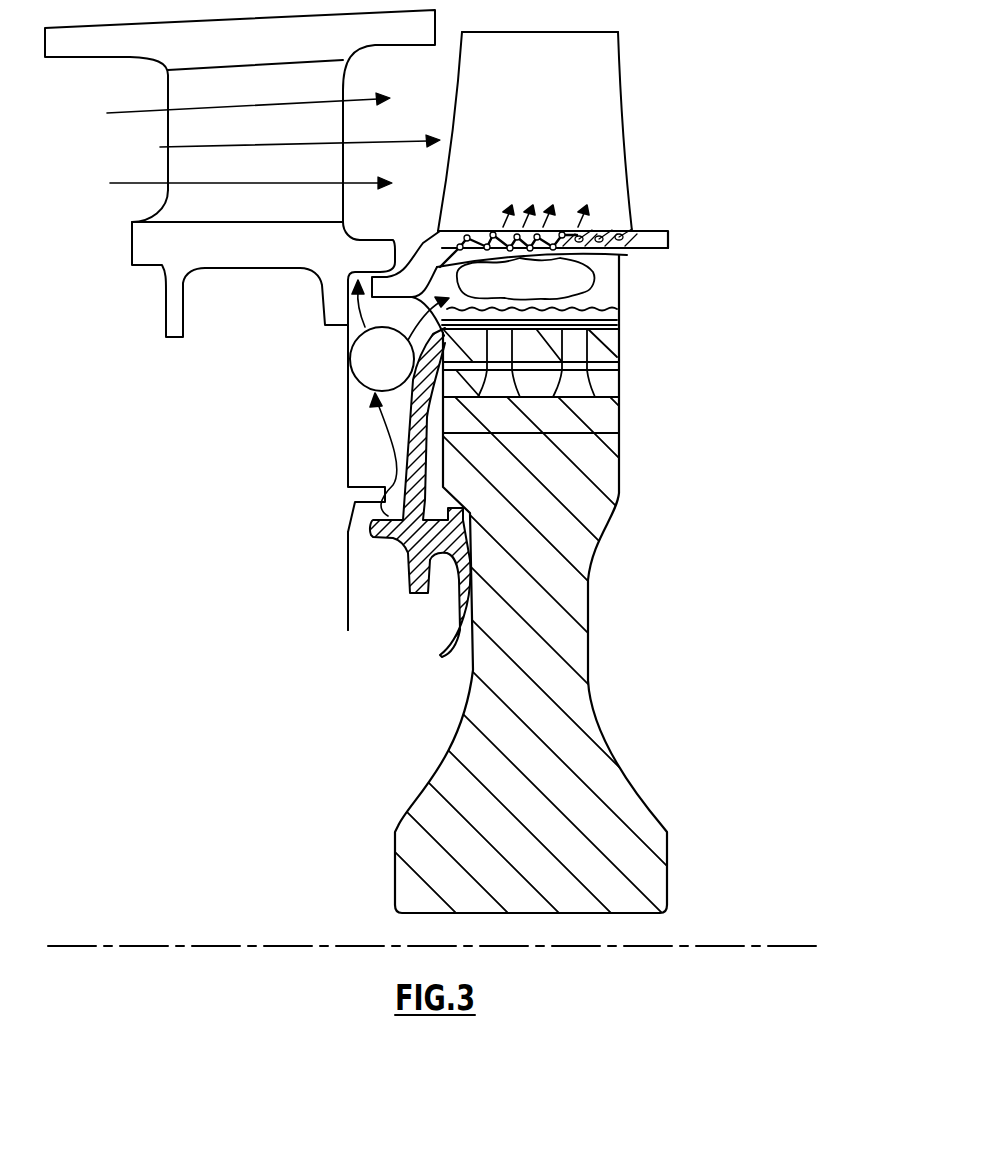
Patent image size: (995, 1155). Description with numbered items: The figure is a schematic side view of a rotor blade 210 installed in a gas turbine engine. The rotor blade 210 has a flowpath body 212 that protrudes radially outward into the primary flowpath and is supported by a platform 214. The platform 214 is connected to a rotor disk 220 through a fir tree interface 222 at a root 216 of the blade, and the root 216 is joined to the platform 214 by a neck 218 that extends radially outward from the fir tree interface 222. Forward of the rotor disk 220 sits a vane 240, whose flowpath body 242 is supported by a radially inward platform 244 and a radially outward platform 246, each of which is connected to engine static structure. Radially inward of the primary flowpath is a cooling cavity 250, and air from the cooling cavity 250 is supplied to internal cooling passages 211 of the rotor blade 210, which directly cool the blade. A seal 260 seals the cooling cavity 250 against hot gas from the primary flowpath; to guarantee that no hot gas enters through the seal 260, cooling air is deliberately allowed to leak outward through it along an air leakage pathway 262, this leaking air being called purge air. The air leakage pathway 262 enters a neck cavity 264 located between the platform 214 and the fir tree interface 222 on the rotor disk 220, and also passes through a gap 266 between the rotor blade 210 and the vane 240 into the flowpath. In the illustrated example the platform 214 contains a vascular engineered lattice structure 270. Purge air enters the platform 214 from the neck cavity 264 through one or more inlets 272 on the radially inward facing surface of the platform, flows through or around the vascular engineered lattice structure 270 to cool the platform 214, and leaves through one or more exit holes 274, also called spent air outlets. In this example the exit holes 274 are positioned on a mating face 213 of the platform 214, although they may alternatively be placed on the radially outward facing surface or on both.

The rotor blade 210 is at (622, 127).
The internal cooling passages 211 is at (502, 375).
The flowpath body 212 is at (598, 72).
The mating face 213 is at (670, 236).
The platform 214 is at (670, 248).
The root 216 is at (636, 335).
The neck 218 is at (590, 258).
The rotor disk 220 is at (580, 607).
The fir tree interface 222 is at (633, 322).
The vane 240 is at (185, 125).
The flowpath body 242 is at (185, 157).
The radially inward platform 244 is at (253, 255).
The radially outward platform 246 is at (277, 57).
The cooling cavity 250 is at (387, 628).
The seal 260 is at (372, 537).
The air leakage pathway 262 is at (350, 372).
The neck cavity 264 is at (590, 284).
The gap 266 is at (398, 257).
The vascular engineered lattice structure 270 is at (487, 245).
The inlets 272 is at (435, 265).
The exit holes 274 is at (604, 228).